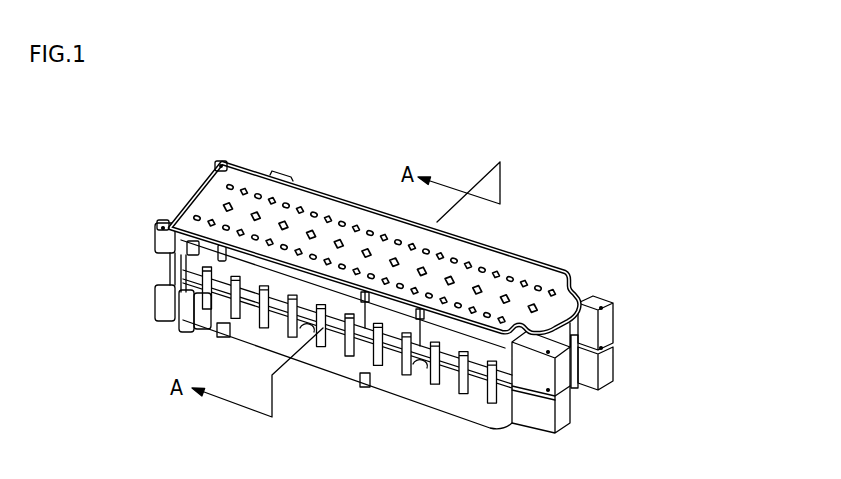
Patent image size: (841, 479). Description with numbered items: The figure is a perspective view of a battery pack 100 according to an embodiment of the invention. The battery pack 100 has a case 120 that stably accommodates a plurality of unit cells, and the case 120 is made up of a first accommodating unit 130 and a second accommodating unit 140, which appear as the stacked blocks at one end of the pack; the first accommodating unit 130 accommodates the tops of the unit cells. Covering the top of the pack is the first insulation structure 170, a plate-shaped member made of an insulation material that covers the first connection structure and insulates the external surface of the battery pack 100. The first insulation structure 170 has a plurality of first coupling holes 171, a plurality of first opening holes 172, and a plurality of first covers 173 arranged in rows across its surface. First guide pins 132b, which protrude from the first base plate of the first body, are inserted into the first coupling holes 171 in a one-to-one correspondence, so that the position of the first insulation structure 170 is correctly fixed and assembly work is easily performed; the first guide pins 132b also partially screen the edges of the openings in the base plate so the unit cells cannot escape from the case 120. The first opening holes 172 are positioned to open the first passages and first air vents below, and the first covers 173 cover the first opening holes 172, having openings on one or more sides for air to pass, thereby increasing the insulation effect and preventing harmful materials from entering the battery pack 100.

The battery pack 100 is at (123, 168).
The case 120 is at (688, 293).
The first accommodating unit 130 is at (578, 327).
The second accommodating unit 140 is at (580, 400).
The first insulation structure 170 is at (551, 278).
The first coupling holes 171 is at (310, 208).
The first opening holes 172 is at (236, 186).
The first covers 173 is at (245, 189).
The first guide pins 132b is at (485, 270).